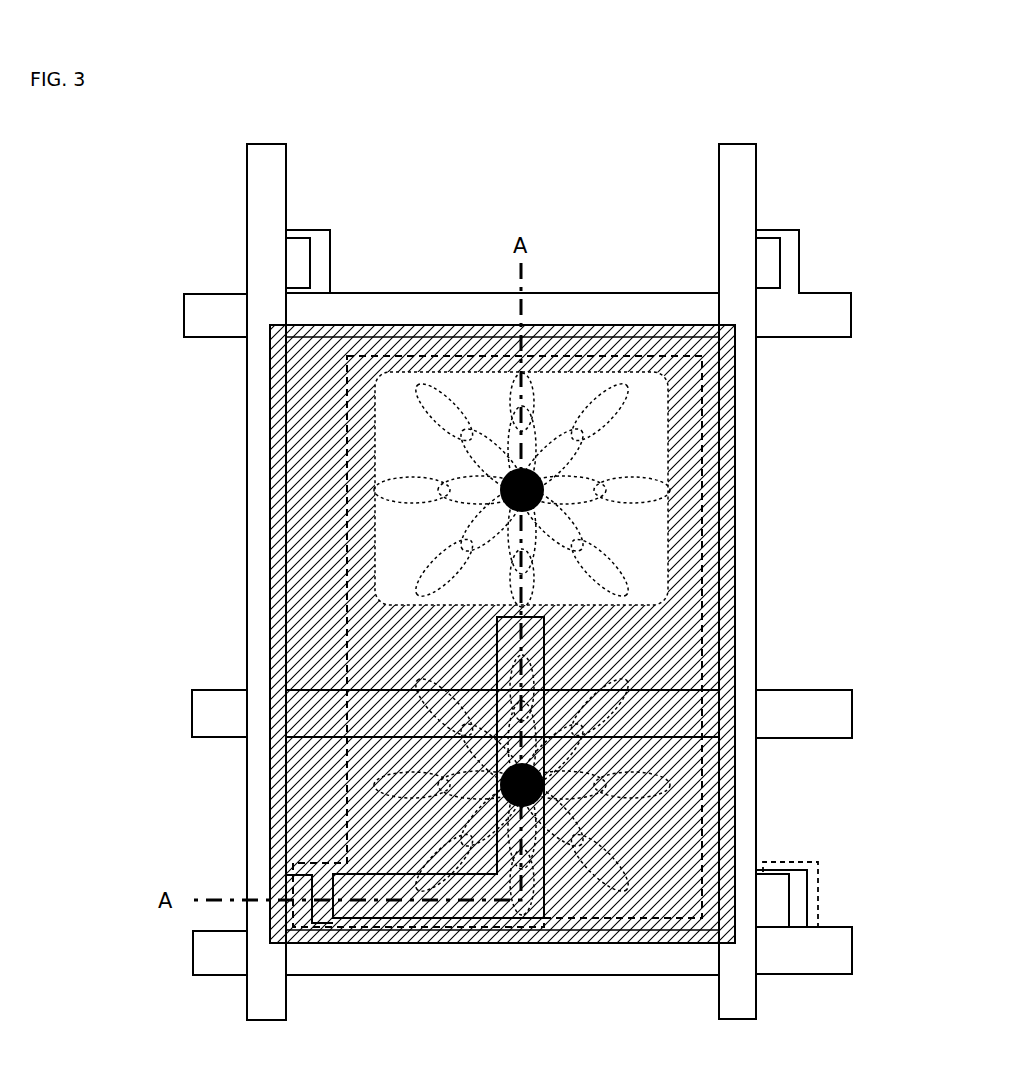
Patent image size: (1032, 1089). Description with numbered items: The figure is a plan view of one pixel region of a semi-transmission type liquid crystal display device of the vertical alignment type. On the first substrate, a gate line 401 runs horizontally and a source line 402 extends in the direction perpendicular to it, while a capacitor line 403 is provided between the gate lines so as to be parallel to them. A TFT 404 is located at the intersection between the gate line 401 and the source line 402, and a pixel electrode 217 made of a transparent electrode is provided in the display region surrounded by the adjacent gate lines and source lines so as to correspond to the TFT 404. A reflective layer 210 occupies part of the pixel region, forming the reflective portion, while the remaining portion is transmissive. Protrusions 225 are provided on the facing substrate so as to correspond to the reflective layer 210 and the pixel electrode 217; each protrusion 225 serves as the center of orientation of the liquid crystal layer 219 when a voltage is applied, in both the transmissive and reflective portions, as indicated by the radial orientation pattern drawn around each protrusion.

The reflective layer 210 is at (740, 438).
The pixel electrode 217 is at (716, 771).
The liquid crystal layer 219 is at (440, 407).
The protrusion 225 is at (547, 500).
The gate line 401 is at (223, 955).
The source line 402 is at (263, 191).
The capacitor line 403 is at (222, 712).
The TFT 404 is at (323, 878).